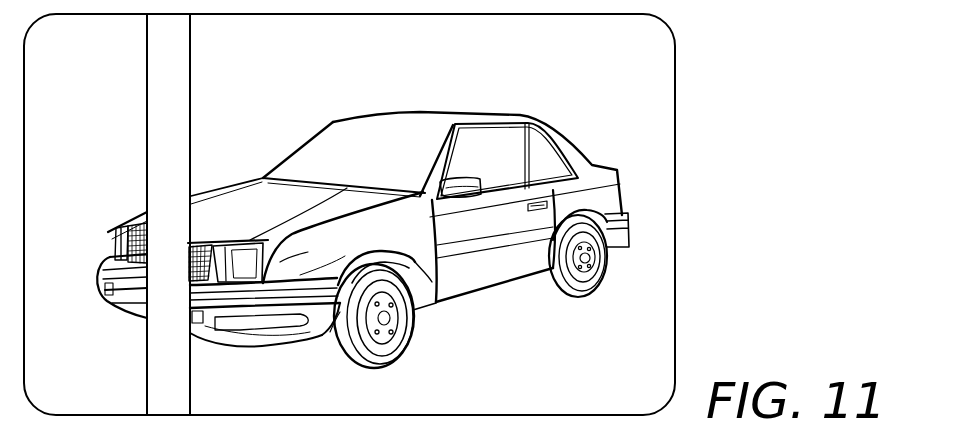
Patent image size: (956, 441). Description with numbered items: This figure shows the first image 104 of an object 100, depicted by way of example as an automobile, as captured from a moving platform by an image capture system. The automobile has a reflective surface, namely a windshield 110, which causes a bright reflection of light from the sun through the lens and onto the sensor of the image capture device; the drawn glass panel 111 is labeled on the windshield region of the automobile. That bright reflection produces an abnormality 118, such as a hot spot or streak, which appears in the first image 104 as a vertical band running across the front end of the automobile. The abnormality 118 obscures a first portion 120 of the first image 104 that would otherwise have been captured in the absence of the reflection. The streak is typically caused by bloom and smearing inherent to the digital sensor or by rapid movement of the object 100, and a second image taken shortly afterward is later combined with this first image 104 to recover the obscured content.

The object 100 is at (342, 203).
The first image 104 is at (676, 134).
The windshield 110 is at (145, 218).
The windshield 111 is at (344, 143).
The abnormality 118 is at (172, 208).
The first portion 120 is at (167, 297).